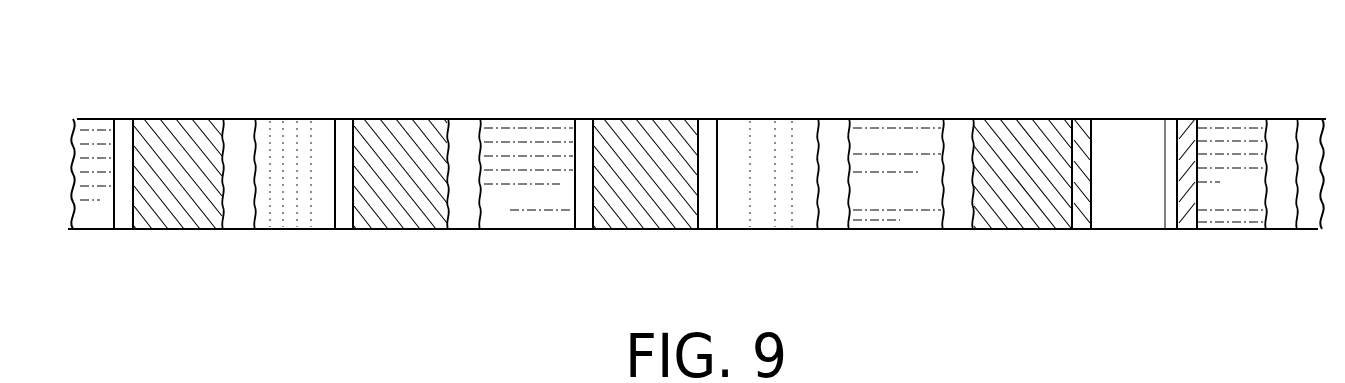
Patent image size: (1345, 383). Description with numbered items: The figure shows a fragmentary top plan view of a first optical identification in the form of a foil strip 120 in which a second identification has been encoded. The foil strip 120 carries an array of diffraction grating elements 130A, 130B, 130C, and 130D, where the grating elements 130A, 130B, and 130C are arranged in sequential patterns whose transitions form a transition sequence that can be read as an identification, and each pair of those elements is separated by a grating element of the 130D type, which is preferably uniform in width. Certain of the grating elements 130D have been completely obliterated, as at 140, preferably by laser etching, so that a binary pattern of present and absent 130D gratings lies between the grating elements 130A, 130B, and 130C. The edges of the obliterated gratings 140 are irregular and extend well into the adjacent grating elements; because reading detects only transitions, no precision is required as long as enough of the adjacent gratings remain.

The foil strip 120 is at (697, 146).
The diffraction grating element 130A is at (290, 215).
The diffraction grating element 130B is at (517, 213).
The diffraction grating element 130C is at (1027, 213).
The diffraction grating element 130D is at (707, 215).
The obliterated grating element 140 is at (832, 133).